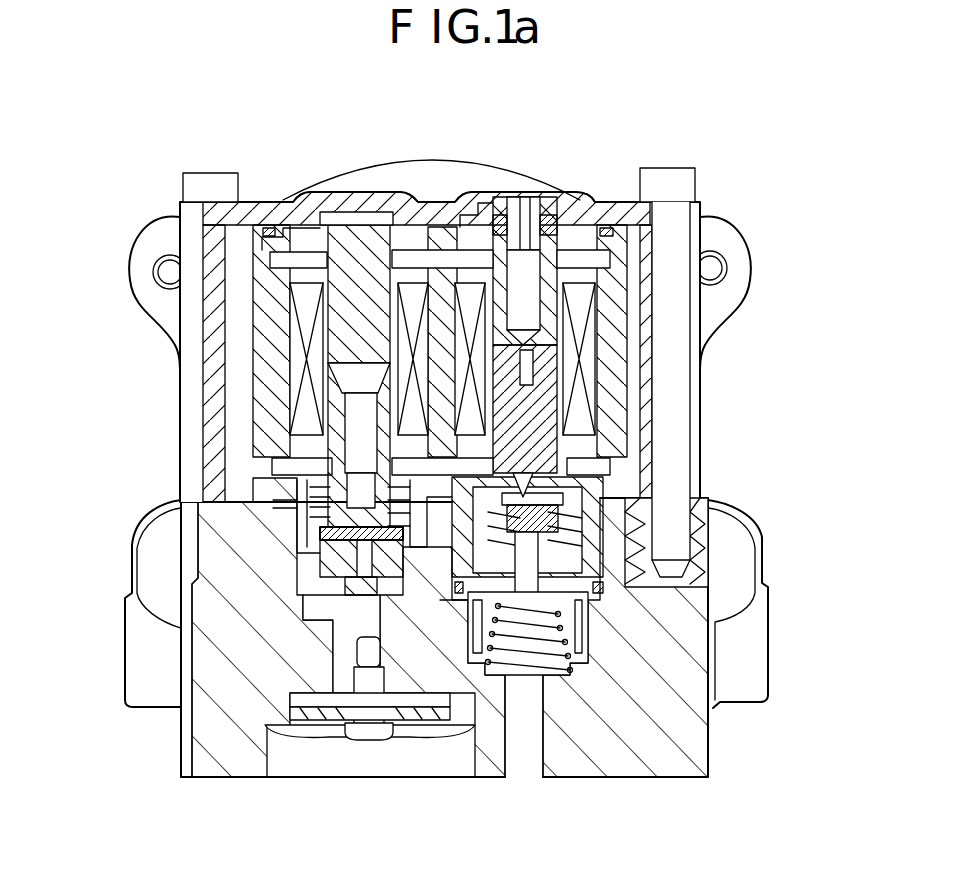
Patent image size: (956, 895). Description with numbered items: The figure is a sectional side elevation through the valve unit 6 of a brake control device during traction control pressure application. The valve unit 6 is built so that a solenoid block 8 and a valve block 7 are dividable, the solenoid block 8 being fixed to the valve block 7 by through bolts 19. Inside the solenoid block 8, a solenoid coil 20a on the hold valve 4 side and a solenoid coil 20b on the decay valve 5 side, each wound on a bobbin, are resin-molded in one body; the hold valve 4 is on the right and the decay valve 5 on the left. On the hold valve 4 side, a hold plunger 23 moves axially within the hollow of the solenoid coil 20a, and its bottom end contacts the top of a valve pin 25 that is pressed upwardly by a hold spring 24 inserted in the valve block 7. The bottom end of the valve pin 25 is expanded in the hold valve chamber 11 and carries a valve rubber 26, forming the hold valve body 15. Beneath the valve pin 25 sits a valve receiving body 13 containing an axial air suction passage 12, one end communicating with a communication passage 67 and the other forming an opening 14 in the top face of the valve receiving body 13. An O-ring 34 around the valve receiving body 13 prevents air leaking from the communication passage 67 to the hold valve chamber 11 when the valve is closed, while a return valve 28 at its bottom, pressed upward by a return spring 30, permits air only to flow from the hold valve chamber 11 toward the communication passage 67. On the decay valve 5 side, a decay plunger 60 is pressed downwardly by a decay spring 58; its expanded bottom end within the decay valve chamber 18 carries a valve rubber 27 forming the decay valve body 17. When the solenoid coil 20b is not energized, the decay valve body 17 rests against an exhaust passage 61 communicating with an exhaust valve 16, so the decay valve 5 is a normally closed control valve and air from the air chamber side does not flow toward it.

The valve unit 6 is at (172, 165).
The through bolts 19 is at (212, 172).
The decay valve 5 is at (283, 213).
The valve pin 25 is at (448, 238).
The hold plunger 23 is at (557, 240).
The hold valve 4 is at (617, 225).
The solenoid block 8 is at (712, 225).
The solenoid coil 20a is at (580, 303).
The solenoid coil 20b is at (302, 300).
The valve rubber 26 is at (560, 425).
The hold valve body 15 is at (600, 470).
The opening 14 is at (565, 470).
The hold valve chamber 11 is at (640, 520).
The valve receiving body 13 is at (680, 535).
The hold spring 24 is at (600, 578).
The air suction passage 12 is at (683, 565).
The O-ring 34 is at (697, 613).
The return valve 28 is at (693, 737).
The return spring 30 is at (600, 580).
The communication passage 67 is at (525, 745).
The valve rubber 27 is at (392, 582).
The decay plunger 60 is at (333, 380).
The decay spring 58 is at (330, 490).
The decay valve body 17 is at (340, 515).
The decay valve chamber 18 is at (320, 548).
The exhaust passage 61 is at (300, 625).
The exhaust valve 16 is at (325, 690).
The valve block 7 is at (147, 707).